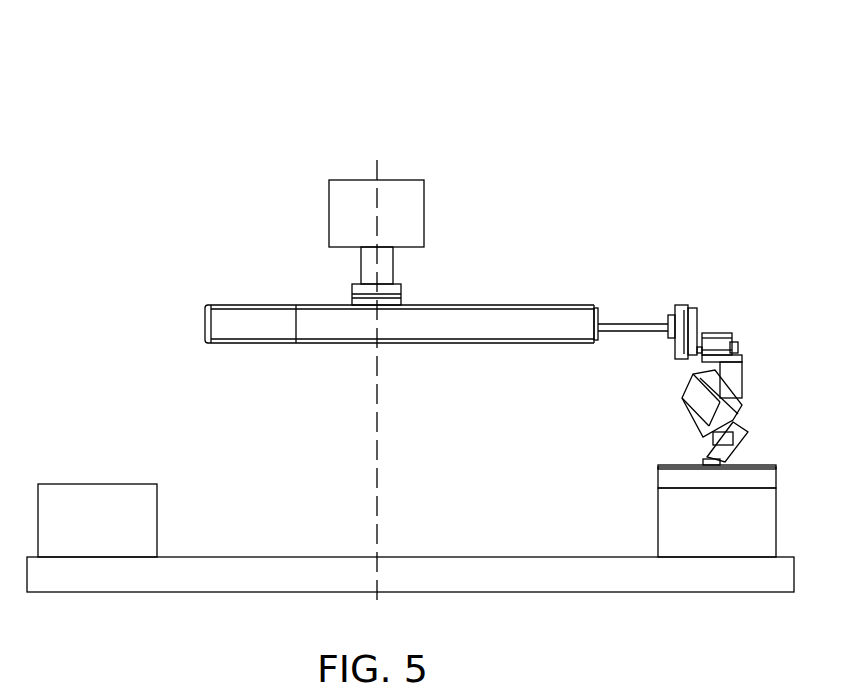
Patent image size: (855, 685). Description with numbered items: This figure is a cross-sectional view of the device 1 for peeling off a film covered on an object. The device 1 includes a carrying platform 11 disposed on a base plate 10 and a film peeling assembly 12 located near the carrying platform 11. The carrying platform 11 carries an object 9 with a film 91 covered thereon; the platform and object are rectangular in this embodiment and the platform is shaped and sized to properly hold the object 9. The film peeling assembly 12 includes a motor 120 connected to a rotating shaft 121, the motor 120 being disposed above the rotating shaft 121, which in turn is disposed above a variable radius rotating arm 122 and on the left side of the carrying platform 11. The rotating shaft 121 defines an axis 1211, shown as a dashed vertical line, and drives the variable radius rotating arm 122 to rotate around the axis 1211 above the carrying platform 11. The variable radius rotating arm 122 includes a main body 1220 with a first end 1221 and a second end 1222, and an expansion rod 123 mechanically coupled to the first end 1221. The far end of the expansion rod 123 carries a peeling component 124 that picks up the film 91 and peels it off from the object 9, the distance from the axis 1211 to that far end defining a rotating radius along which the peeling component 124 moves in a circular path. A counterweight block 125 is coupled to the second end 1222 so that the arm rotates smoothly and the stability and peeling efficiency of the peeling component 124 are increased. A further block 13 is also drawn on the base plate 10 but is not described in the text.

The device 1 is at (383, 64).
The object 9 is at (670, 482).
The film 91 is at (670, 467).
The base plate 10 is at (268, 568).
The carrying platform 11 is at (672, 545).
The film peeling assembly 12 is at (473, 160).
The storage unit 13 is at (92, 497).
The motor 120 is at (362, 187).
The rotating shaft 121 is at (382, 268).
The variable radius rotating arm 122 is at (528, 283).
The expansion rod 123 is at (620, 328).
The peeling component 124 is at (708, 407).
The counterweight block 125 is at (252, 313).
The axis 1211 is at (405, 457).
The main body 1220 is at (487, 337).
The first end 1221 is at (582, 337).
The second end 1222 is at (315, 338).